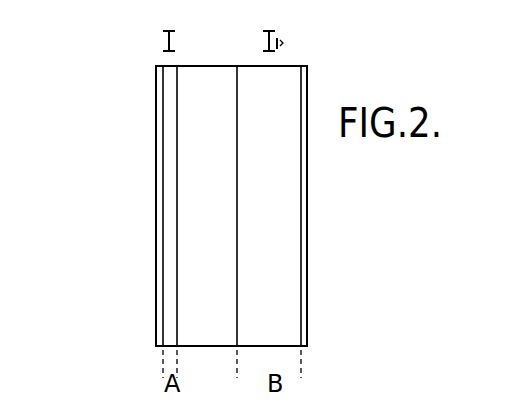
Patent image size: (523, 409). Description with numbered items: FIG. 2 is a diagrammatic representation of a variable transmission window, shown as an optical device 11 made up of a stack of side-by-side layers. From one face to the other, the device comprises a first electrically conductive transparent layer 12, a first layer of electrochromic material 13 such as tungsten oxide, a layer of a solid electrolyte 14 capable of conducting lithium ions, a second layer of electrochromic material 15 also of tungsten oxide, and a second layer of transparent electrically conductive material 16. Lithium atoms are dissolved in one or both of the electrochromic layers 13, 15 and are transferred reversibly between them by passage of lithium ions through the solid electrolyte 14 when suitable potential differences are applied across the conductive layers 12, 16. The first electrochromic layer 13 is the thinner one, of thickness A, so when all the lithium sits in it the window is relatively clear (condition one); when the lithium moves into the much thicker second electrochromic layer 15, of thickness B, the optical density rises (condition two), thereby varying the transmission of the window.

The optical device 11 is at (135, 99).
The first electrically conductive transparent layer 12 is at (155, 170).
The first layer of electrochromic material 13 is at (173, 215).
The layer of a solid electrolyte 14 is at (192, 290).
The second layer of electrochromic material 15 is at (280, 210).
The second layer of transparent electrically conductive material 16 is at (307, 270).